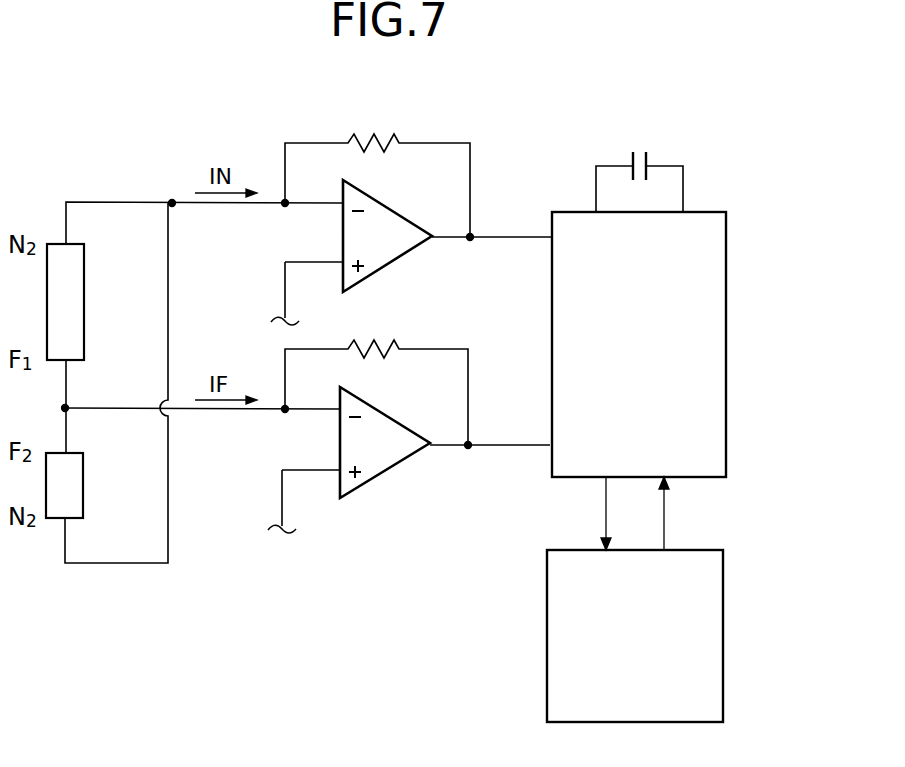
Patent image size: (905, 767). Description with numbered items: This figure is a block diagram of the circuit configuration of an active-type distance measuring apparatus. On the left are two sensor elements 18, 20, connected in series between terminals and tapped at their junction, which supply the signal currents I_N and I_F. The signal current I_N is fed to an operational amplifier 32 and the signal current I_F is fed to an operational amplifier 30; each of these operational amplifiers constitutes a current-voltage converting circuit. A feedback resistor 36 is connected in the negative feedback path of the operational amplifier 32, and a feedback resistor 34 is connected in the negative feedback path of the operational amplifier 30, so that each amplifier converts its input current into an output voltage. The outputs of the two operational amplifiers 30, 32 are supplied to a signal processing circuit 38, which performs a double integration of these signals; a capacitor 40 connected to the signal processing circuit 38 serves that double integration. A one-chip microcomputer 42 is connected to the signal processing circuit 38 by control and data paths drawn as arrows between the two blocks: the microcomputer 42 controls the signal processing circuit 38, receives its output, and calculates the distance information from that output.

The first thermocouple/sensor element 18 is at (84, 317).
The second thermocouple/sensor element 20 is at (82, 498).
The operational amplifier 30 is at (383, 475).
The operational amplifier 32 is at (384, 268).
The feedback resistor 34 is at (390, 345).
The feedback resistor 36 is at (398, 140).
The signal processing circuit 38 is at (727, 262).
The capacitor 40 is at (648, 152).
The one-chip microcomputer 42 is at (723, 625).